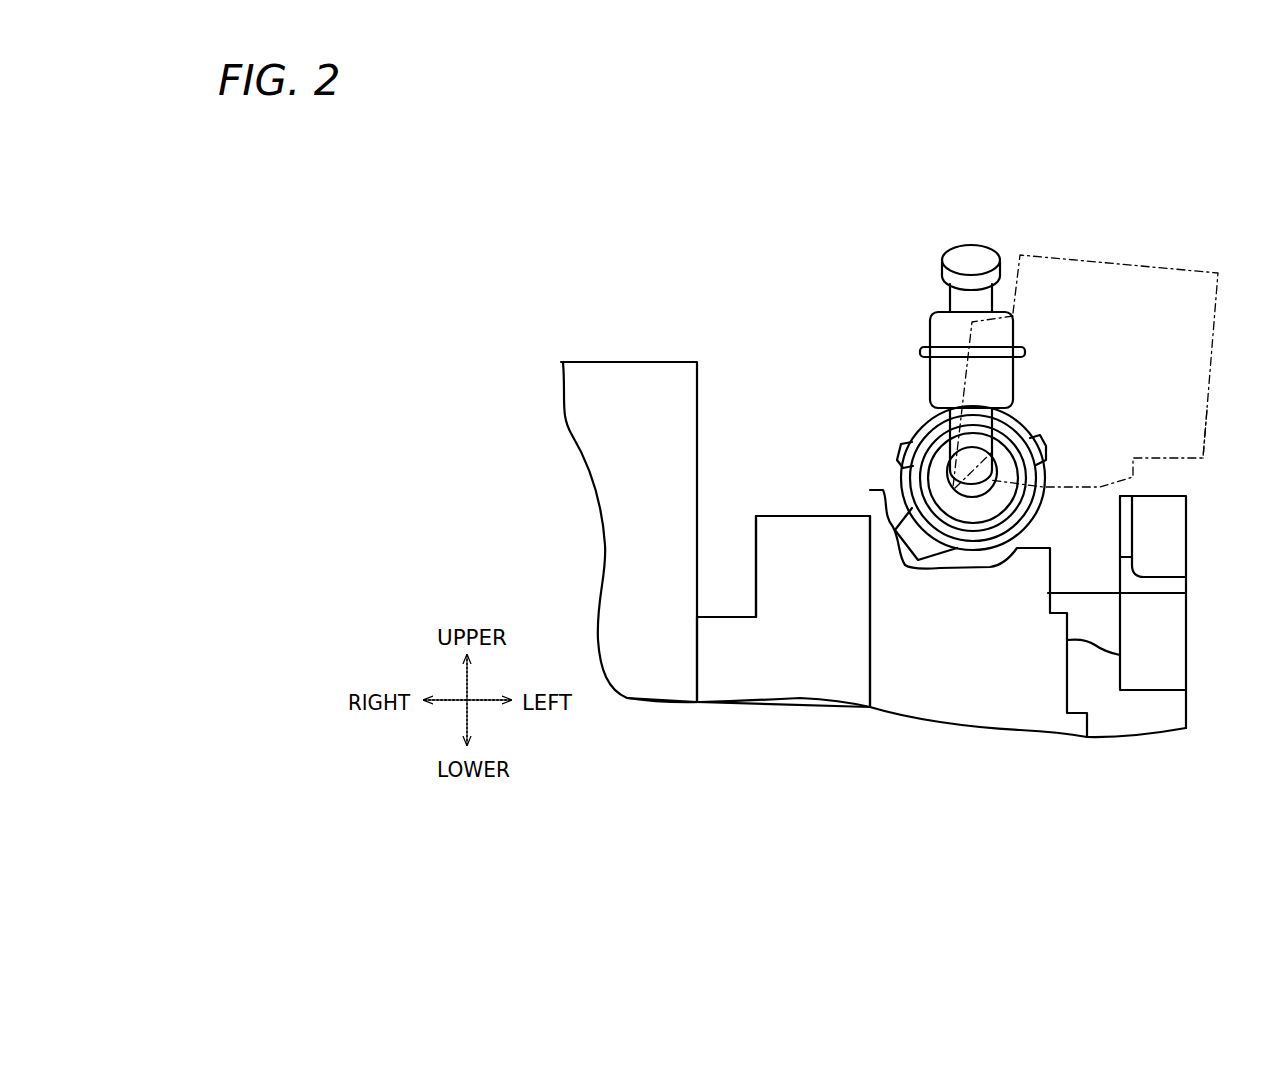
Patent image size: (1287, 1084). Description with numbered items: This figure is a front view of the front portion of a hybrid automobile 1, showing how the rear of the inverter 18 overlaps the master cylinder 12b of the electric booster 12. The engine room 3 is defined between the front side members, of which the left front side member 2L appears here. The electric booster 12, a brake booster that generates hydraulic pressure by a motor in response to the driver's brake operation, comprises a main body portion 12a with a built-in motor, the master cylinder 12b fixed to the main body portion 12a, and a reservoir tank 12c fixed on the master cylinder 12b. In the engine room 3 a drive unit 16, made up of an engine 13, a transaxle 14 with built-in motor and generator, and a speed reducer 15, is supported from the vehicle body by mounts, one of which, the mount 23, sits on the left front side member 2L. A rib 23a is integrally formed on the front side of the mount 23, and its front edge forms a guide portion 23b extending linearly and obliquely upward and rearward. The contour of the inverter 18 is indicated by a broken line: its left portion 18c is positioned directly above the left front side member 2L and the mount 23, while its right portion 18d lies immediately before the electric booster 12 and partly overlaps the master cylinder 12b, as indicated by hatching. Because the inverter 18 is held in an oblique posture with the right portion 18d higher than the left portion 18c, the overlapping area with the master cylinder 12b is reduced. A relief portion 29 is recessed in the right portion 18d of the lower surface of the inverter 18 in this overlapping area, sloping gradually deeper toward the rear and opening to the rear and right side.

The hybrid automobile 1 is at (1125, 233).
The engine room 3 is at (740, 370).
The electric booster 12 is at (833, 333).
The main body portion 12a is at (900, 449).
The master cylinder 12b is at (930, 433).
The reservoir tank 12c is at (930, 372).
The engine 13 is at (675, 693).
The transaxle 14 is at (915, 703).
The speed reducer 15 is at (808, 688).
The drive unit 16 is at (877, 772).
The inverter 18 is at (1163, 267).
The left portion 18c is at (1207, 380).
The right portion 18d is at (967, 340).
The mount 23 is at (1170, 530).
The rib 23a is at (1115, 542).
The guide portion 23b is at (1123, 513).
The relief portion 29 is at (1045, 441).
The left front side member 2L is at (1170, 643).